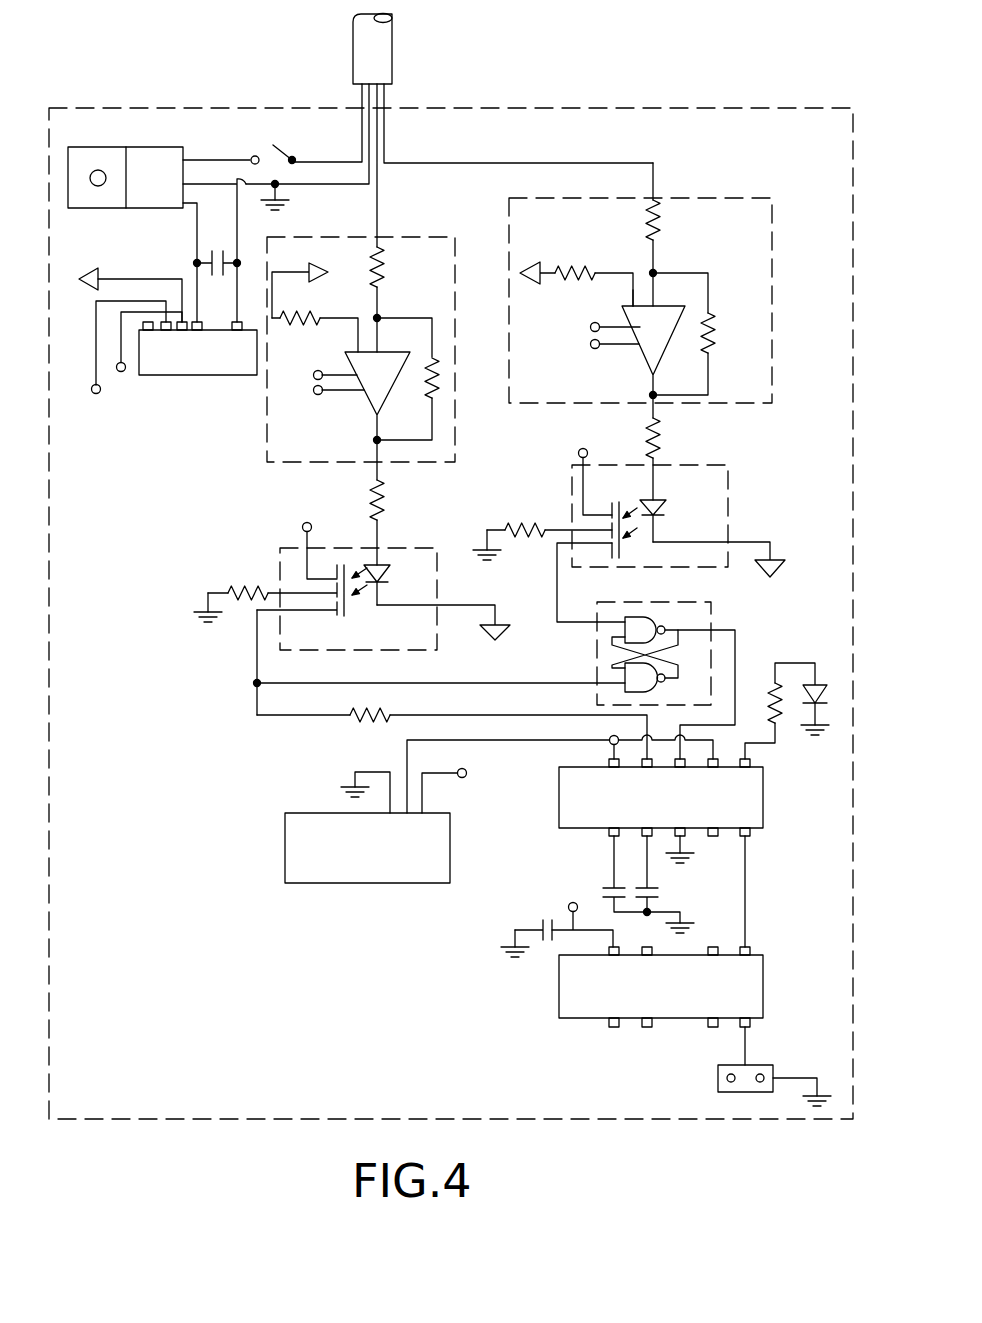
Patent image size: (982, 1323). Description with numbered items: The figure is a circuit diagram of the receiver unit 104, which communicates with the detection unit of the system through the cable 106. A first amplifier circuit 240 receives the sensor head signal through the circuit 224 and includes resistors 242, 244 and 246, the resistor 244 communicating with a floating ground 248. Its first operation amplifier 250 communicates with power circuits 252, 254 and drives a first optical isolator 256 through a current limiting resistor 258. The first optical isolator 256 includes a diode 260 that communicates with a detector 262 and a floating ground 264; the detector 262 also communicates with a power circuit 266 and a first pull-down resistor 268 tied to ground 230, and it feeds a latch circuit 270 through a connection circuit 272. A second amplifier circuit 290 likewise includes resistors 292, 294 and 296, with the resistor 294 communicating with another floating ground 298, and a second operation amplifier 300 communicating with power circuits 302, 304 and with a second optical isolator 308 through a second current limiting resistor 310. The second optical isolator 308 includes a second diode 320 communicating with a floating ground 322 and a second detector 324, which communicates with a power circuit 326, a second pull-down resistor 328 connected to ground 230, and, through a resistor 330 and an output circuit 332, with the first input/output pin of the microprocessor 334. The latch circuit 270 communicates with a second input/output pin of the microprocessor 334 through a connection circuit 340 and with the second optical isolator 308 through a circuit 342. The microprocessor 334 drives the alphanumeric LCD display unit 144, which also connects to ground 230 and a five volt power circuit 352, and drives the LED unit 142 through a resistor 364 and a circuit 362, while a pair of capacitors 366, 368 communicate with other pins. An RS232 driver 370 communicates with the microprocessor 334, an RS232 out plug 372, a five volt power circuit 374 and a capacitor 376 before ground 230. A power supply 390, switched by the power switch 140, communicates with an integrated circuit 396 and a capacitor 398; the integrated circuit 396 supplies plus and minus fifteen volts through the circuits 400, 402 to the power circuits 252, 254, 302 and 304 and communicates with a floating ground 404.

The receiver unit 104 is at (85, 108).
The cable 106 is at (392, 38).
The power switch 140 is at (291, 153).
The LED unit 142 is at (818, 680).
The alphanumeric LCD display unit 144 is at (285, 832).
The circuit 224 is at (549, 163).
The ground 230 is at (283, 205).
The first amplifier circuit 240 is at (772, 252).
The resistor 242 is at (659, 214).
The resistor 244 is at (590, 265).
The resistor 246 is at (713, 332).
The floating ground 248 is at (534, 264).
The first operation amplifier 250 is at (621, 306).
The power circuit 252 is at (590, 330).
The power circuit 254 is at (590, 348).
The first optical isolator 256 is at (745, 505).
The current limiting resistor 258 is at (660, 430).
The diode 260 is at (660, 508).
The detector 262 is at (622, 555).
The floating ground 264 is at (788, 562).
The power circuit 266 is at (578, 452).
The first pull-down resistor 268 is at (540, 520).
The latch circuit 270 is at (677, 598).
The connection circuit 272 is at (563, 594).
The second amplifier circuit 290 is at (400, 237).
The resistor 292 is at (381, 262).
The resistor 294 is at (301, 325).
The resistor 296 is at (437, 380).
The floating ground 298 is at (329, 271).
The second operation amplifier 300 is at (376, 416).
The power circuit 302 is at (313, 375).
The power circuit 304 is at (322, 391).
The second optical isolator 308 is at (280, 547).
The second current limiting resistor 310 is at (384, 496).
The second diode 320 is at (380, 562).
The floating ground 322 is at (512, 636).
The second detector 324 is at (345, 618).
The power circuit 326 is at (307, 522).
The second pull-down resistor 328 is at (248, 585).
The resistor 330 is at (358, 722).
The output circuit 332 is at (425, 715).
The microprocessor 334 is at (763, 805).
The connection circuit 340 is at (737, 640).
The circuit 342 is at (517, 687).
The 5 volt power circuit 352 is at (468, 770).
The circuit 362 is at (773, 745).
The resistor 364 is at (771, 702).
The capacitor 366 is at (652, 887).
The capacitor 368 is at (608, 886).
The RS232 driver 370 is at (763, 982).
The RS232 out plug 372 is at (718, 1078).
The 5 volt power circuit 374 is at (570, 903).
The capacitor 376 is at (545, 945).
The power supply 390 is at (97, 208).
The integrated circuit 396 is at (175, 375).
The capacitor 398 is at (212, 250).
The circuit 400 is at (96, 394).
The circuit 402 is at (121, 372).
The floating ground 404 is at (90, 270).